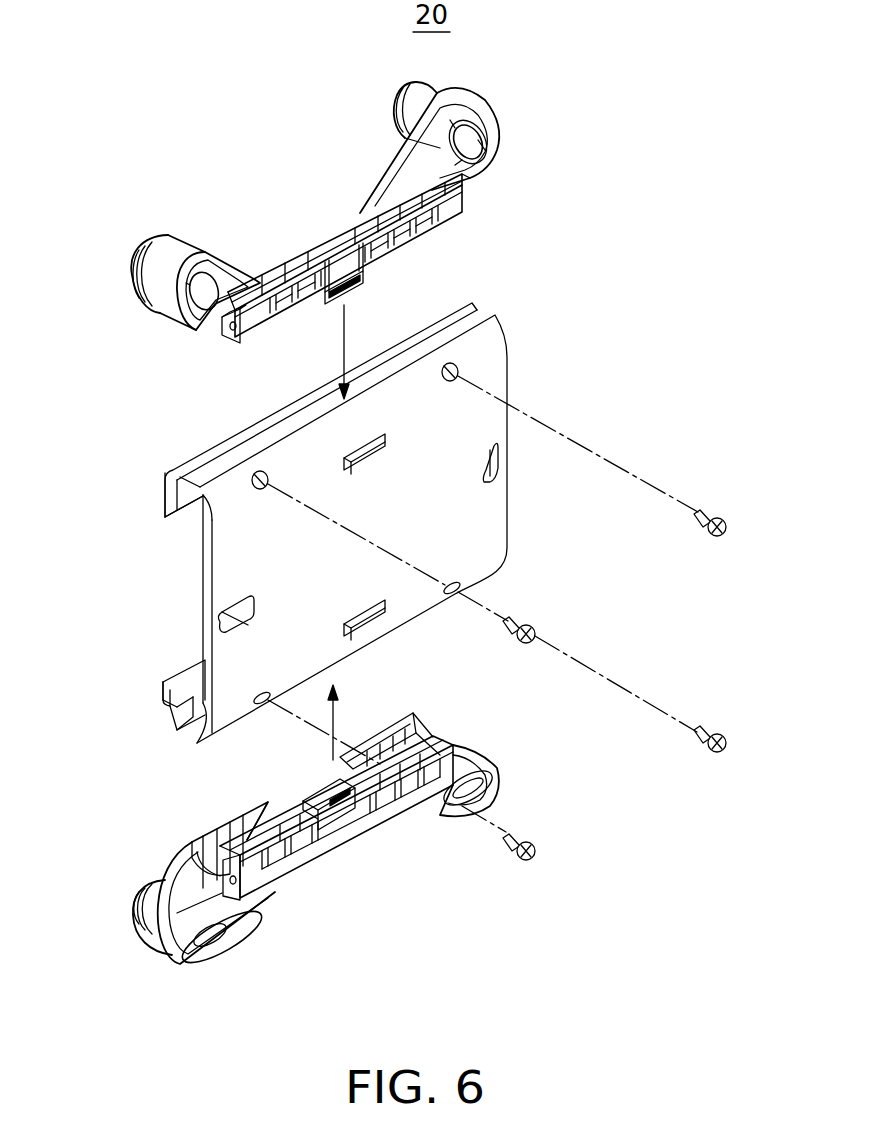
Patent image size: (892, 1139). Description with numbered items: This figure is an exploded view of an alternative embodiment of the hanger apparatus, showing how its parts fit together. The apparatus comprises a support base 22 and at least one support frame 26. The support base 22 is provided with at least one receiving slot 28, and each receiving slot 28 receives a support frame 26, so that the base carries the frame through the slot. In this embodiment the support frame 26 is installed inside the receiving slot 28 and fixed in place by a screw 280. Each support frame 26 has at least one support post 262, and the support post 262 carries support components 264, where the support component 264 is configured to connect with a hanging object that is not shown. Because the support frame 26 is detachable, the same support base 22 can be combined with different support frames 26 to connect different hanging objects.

The support base 22 is at (497, 532).
The support frame 26 is at (332, 242).
The receiving slot 28 is at (182, 482).
The support post 262 is at (222, 268).
The support component 264 is at (138, 905).
The screw 280 is at (714, 737).